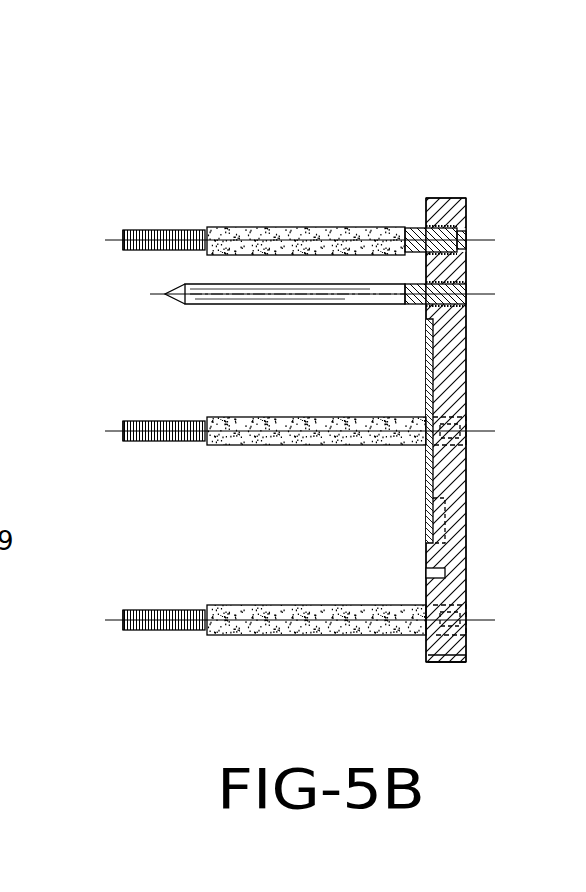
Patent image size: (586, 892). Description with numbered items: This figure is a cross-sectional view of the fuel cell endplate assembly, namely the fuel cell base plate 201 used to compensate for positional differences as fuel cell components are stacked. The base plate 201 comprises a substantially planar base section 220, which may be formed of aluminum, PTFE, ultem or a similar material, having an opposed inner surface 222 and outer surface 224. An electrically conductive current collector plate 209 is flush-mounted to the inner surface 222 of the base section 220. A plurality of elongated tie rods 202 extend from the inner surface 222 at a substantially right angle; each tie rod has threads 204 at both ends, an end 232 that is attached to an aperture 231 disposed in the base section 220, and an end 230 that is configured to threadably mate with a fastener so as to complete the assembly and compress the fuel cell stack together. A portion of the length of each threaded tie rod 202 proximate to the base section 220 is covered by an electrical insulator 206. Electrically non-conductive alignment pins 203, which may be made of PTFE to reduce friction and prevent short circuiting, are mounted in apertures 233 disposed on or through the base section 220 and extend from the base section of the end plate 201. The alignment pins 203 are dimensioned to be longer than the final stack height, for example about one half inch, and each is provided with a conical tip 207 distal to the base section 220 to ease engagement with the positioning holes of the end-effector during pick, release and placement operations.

The fuel cell base plate 201 is at (448, 198).
The tie rods 202 is at (168, 231).
The alignment pins 203 is at (306, 305).
The threads 204 is at (137, 231).
The electrical insulator 206 is at (290, 228).
The conical tip 207 is at (176, 300).
The current collector plate 209 is at (430, 462).
The base section 220 is at (440, 648).
The inner surface 222 is at (428, 557).
The outer surface 224 is at (466, 516).
The end of tie rod 230 is at (125, 241).
The apertures 231 is at (450, 230).
The end of tie rod 232 is at (460, 246).
The apertures 233 is at (462, 300).